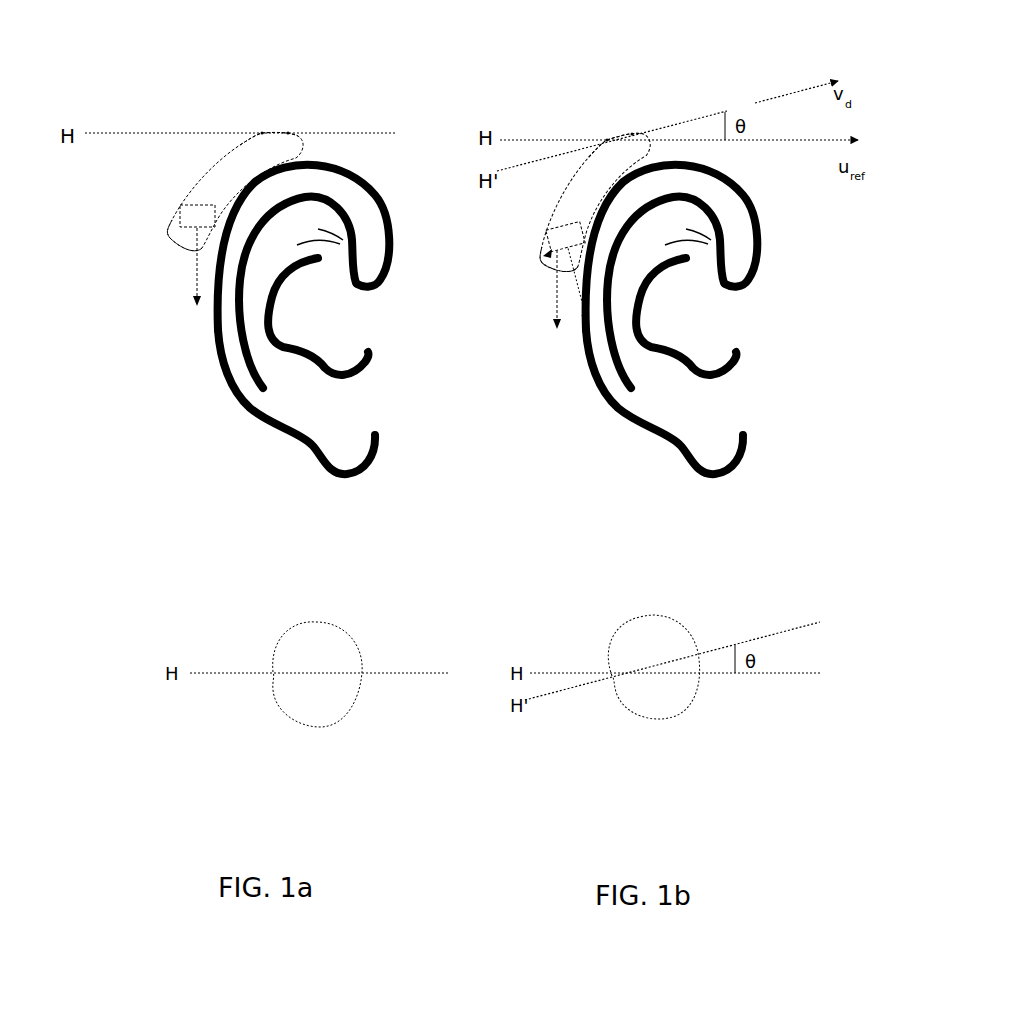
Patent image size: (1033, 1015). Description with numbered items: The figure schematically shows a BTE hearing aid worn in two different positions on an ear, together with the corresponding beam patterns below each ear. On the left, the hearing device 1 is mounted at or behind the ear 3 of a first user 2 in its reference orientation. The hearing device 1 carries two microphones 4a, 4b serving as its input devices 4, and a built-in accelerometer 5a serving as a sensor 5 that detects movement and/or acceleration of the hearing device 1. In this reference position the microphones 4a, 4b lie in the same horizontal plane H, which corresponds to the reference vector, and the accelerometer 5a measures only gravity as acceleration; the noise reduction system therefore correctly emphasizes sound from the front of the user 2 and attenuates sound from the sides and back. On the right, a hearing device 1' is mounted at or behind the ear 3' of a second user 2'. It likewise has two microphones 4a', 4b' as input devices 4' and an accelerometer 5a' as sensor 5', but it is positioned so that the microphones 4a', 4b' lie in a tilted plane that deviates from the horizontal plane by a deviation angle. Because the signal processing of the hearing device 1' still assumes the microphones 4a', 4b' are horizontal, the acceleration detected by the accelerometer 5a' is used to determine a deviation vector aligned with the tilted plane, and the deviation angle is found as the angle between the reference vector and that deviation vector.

In FIG. 1a, the hearing device 1 is at (188, 163).
In FIG. 1a, the first user 2 is at (304, 276).
In FIG. 1a, the ear 3 is at (277, 402).
In FIG. 1a, the input devices 4 is at (245, 82).
In FIG. 1a, the microphone 4a is at (275, 87).
In FIG. 1a, the microphone 4b is at (306, 87).
In FIG. 1a, the sensor 5 is at (148, 228).
In FIG. 1a, the accelerometer 5a is at (197, 216).
In FIG. 1b, the hearing device 1' is at (552, 175).
In FIG. 1b, the second user 2' is at (672, 276).
In FIG. 1b, the ear 3' is at (641, 402).
In FIG. 1b, the input devices 4' is at (589, 88).
In FIG. 1b, the microphone 4a' is at (620, 90).
In FIG. 1b, the microphone 4b' is at (655, 87).
In FIG. 1b, the sensor 5' is at (517, 250).
In FIG. 1b, the accelerometer 5a' is at (565, 237).